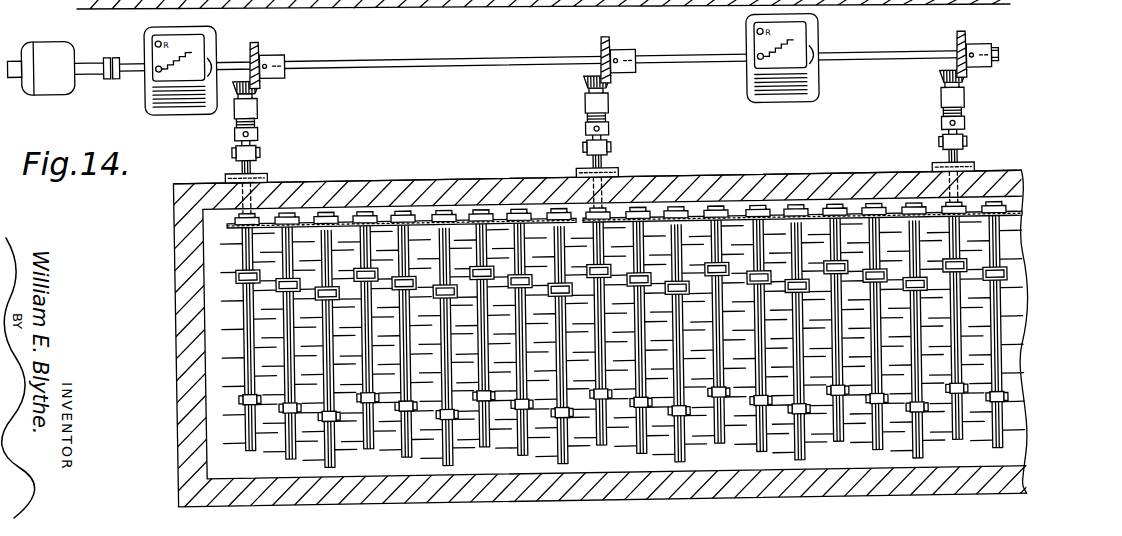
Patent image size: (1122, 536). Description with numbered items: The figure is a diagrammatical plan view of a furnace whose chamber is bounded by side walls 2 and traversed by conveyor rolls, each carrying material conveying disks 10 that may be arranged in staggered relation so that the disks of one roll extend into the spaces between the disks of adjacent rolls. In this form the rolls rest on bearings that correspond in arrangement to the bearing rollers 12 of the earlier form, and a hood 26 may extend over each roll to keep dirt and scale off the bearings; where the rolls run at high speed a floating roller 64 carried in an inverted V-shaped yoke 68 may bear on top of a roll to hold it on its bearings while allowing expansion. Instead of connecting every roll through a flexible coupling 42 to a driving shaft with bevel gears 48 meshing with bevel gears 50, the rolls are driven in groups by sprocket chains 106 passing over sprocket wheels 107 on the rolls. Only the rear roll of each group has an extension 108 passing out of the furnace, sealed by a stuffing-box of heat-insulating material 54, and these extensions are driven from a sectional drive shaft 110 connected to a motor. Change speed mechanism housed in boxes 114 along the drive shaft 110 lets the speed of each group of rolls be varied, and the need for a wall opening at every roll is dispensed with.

The side walls 2 is at (446, 181).
The material conveying disks 10 is at (243, 322).
The bearing rollers 12 is at (238, 402).
The hood 26 is at (238, 395).
The flexible coupling 42 is at (235, 137).
The bevel gears 48 is at (586, 84).
The bevel gears 50 is at (603, 38).
The heat-insulating material 54 is at (222, 177).
The floating roller 64 is at (278, 292).
The inverted V-shaped yoke 68 is at (278, 280).
The sprocket chains 106 is at (424, 220).
The sprocket wheels 107 is at (358, 220).
The extension 108 is at (645, 175).
The drive shaft 110 is at (399, 57).
The boxes 114 is at (206, 38).